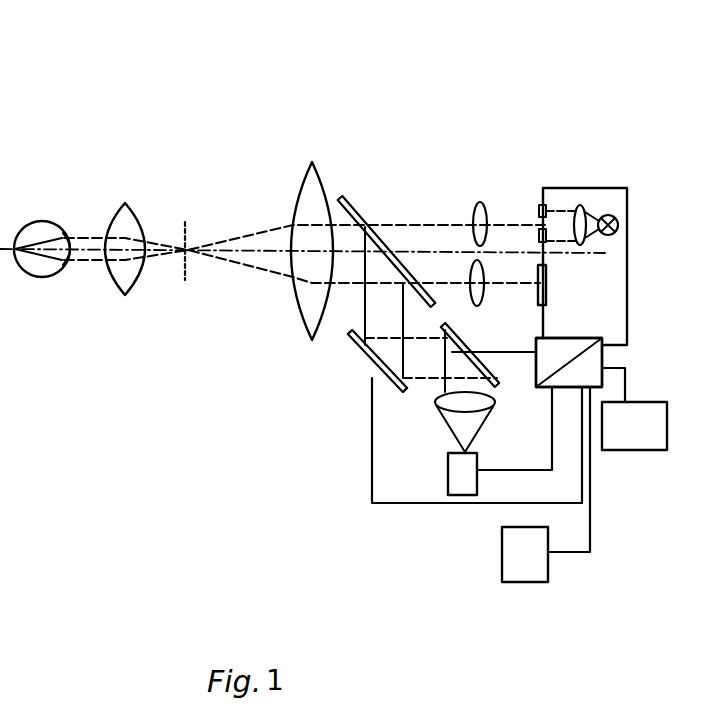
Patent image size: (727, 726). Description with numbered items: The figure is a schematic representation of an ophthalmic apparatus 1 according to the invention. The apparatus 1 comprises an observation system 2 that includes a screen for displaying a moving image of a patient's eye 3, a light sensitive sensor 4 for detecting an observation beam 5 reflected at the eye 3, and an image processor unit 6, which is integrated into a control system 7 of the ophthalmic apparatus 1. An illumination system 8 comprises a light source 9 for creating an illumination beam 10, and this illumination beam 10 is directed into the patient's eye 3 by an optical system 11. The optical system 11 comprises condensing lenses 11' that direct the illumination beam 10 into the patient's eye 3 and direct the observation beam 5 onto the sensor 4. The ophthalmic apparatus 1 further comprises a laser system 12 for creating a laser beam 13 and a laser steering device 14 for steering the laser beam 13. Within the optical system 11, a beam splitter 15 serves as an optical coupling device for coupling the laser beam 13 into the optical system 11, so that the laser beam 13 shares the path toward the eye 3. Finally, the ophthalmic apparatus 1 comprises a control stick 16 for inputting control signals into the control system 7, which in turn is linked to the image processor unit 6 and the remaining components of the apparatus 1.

The ophthalmic apparatus 1 is at (360, 125).
The observation system 2 is at (525, 554).
The patient's eye 3 is at (38, 220).
The light sensitive sensor 4 is at (548, 284).
The observation beam 5 is at (506, 287).
The image processor unit 6 is at (569, 364).
The control system 7 is at (569, 362).
The illumination system 8 is at (599, 198).
The light source 9 is at (619, 234).
The illumination beam 10 is at (443, 225).
The optical system 11 is at (164, 383).
The condensing lenses 11' is at (319, 238).
The laser system 12 is at (445, 487).
The laser beam 13 is at (427, 380).
The laser steering device 14 is at (452, 352).
The beam splitter 15 is at (358, 217).
The control stick 16 is at (634, 426).